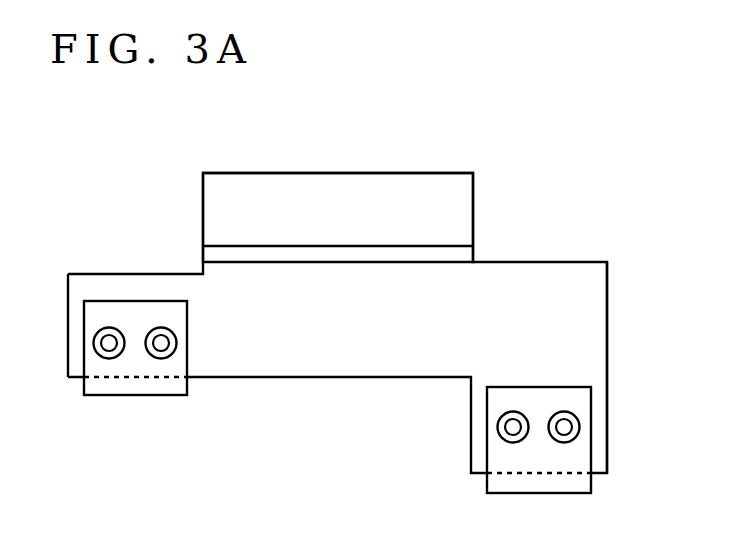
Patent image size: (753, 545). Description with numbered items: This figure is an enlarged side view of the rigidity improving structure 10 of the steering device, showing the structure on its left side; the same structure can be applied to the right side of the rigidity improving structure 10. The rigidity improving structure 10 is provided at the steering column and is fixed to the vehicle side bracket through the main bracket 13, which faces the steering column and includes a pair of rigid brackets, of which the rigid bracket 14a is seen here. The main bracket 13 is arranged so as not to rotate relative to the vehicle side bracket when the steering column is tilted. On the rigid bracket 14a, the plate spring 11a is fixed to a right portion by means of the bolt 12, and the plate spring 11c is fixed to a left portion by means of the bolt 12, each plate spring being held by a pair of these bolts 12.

The rigidity improving structure 10 is at (616, 201).
The plate spring 11a is at (498, 455).
The plate spring 11c is at (177, 384).
The bolt 12 is at (160, 328).
The main bracket 13 is at (395, 181).
The rigid bracket 14a is at (590, 287).